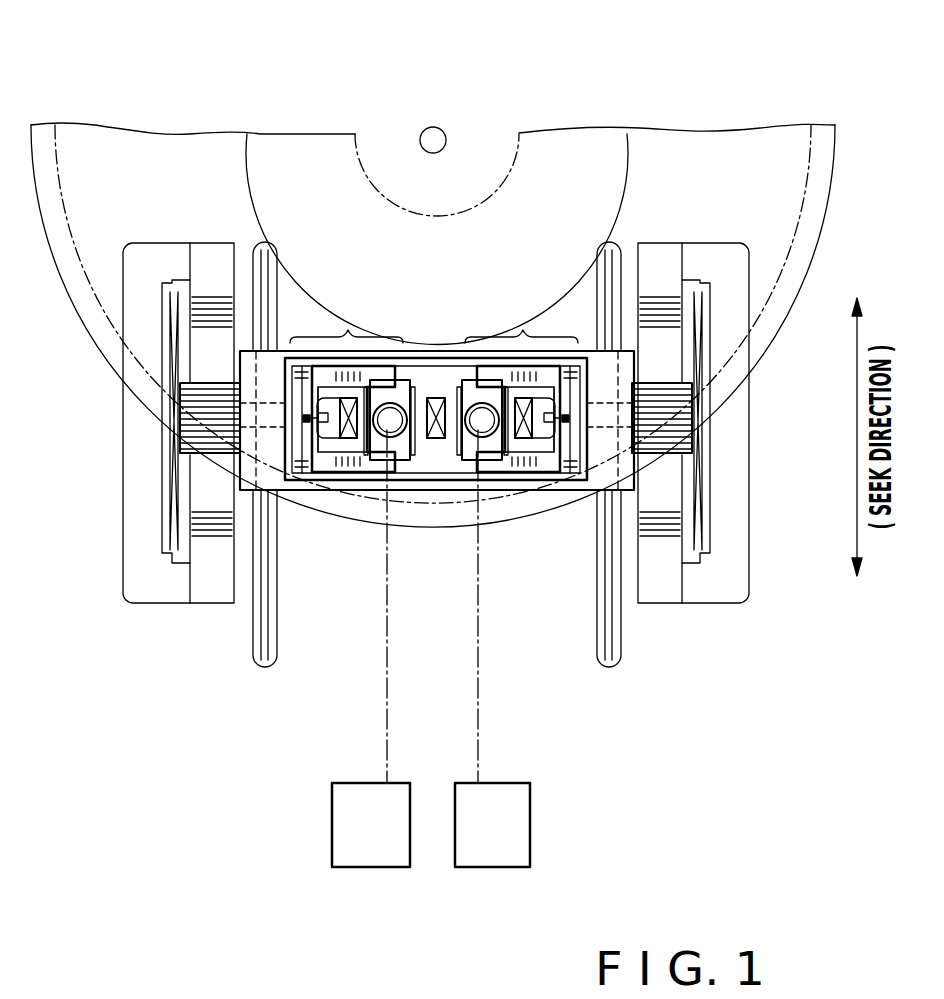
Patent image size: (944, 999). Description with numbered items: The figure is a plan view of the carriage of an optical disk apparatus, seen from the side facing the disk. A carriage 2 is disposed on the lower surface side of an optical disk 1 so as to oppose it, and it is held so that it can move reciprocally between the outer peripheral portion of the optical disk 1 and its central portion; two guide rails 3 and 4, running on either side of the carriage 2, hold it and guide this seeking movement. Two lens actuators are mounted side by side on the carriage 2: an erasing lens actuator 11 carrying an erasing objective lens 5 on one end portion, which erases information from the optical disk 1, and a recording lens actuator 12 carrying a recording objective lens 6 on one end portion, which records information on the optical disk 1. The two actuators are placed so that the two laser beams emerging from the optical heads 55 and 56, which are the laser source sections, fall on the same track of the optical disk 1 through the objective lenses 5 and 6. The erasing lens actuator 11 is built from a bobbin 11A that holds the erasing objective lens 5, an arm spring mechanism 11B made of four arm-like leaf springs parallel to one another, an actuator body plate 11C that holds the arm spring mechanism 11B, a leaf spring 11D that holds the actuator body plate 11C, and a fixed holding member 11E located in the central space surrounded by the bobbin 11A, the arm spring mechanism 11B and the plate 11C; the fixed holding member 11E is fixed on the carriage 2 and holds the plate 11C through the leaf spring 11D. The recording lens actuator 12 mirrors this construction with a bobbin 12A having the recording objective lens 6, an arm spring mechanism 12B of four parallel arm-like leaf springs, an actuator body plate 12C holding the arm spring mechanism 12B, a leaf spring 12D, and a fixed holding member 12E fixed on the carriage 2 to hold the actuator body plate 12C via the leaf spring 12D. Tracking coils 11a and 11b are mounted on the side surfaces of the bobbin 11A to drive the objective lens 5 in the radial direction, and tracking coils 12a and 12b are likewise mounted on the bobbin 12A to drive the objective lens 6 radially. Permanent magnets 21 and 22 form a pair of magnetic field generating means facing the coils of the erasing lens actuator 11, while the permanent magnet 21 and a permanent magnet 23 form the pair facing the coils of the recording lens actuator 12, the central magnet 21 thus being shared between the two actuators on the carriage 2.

The optical disk 1 is at (706, 150).
The carriage 2 is at (300, 350).
The guide rail 3 is at (263, 275).
The guide rail 4 is at (620, 268).
The erasing objective lens 5 is at (490, 478).
The recording objective lens 6 is at (399, 478).
The erasing lens actuator 11 is at (553, 335).
The tracking coil 11a is at (450, 366).
The bobbin 11A is at (484, 440).
The tracking coil 11b is at (455, 455).
The arm spring mechanism 11B is at (560, 472).
The actuator body plate 11C is at (570, 395).
The leaf spring 11D is at (552, 432).
The fixed holding member 11E is at (565, 440).
The recording lens actuator 12 is at (320, 333).
The tracking coil 12a is at (370, 366).
The bobbin 12A is at (386, 440).
The tracking coil 12b is at (364, 455).
The arm spring mechanism 12B is at (316, 470).
The actuator body plate 12C is at (302, 375).
The leaf spring 12D is at (322, 432).
The fixed holding member 12E is at (307, 440).
The permanent magnet 21 is at (440, 440).
The permanent magnet 22 is at (530, 455).
The permanent magnet 23 is at (340, 440).
The optical head 55 is at (505, 783).
The optical head 56 is at (358, 783).